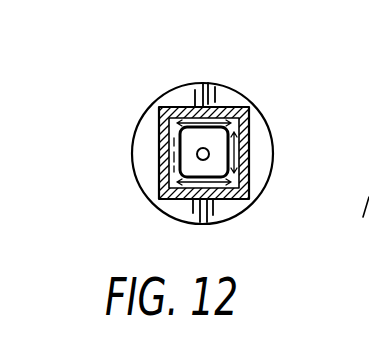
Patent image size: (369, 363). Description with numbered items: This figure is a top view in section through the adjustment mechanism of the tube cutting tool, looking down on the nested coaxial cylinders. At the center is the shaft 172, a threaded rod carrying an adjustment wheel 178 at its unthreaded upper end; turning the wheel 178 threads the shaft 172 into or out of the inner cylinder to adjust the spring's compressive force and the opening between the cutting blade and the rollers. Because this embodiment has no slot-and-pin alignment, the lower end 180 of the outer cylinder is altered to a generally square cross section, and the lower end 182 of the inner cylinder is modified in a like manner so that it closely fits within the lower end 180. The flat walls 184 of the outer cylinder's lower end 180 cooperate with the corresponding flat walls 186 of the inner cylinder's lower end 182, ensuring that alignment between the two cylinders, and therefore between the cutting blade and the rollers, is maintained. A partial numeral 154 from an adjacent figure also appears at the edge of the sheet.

The support arm 154 is at (353, 221).
The shaft 172 is at (209, 154).
The adjustment wheel 178 is at (230, 92).
The lower end of outer cylinder 180 is at (163, 142).
The lower end of inner cylinder 182 is at (162, 184).
The flat walls 184 is at (178, 105).
The flat walls 186 is at (247, 107).